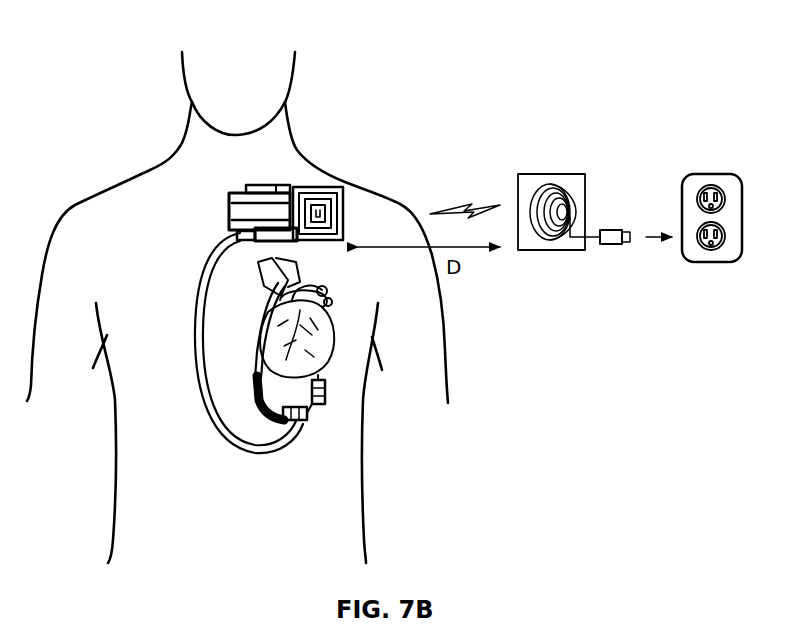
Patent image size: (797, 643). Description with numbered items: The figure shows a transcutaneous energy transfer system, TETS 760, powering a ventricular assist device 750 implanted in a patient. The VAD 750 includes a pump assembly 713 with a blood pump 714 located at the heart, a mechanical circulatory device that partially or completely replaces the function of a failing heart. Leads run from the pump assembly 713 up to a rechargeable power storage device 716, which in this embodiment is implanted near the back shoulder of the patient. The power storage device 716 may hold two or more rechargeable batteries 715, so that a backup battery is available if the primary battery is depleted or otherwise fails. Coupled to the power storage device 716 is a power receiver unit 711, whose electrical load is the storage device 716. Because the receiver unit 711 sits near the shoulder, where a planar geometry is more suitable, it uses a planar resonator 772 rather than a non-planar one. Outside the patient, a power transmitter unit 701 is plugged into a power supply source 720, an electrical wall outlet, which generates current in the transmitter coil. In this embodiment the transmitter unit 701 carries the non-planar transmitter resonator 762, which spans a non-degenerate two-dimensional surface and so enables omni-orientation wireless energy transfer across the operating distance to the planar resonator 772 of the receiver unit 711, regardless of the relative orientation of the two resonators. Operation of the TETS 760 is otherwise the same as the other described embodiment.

The power transmitter unit 701 is at (578, 219).
The power receiver unit 711 is at (312, 187).
The pump assembly 713 is at (253, 368).
The blood pump 714 is at (310, 422).
The rechargeable batteries 715 is at (229, 205).
The rechargeable power storage device 716 is at (263, 185).
The power supply source 720 is at (712, 262).
The ventricular assist device 750 is at (200, 447).
The TETS 760 is at (639, 287).
The non-planar transmitter resonator 762 is at (566, 190).
The planar resonator 772 is at (290, 166).